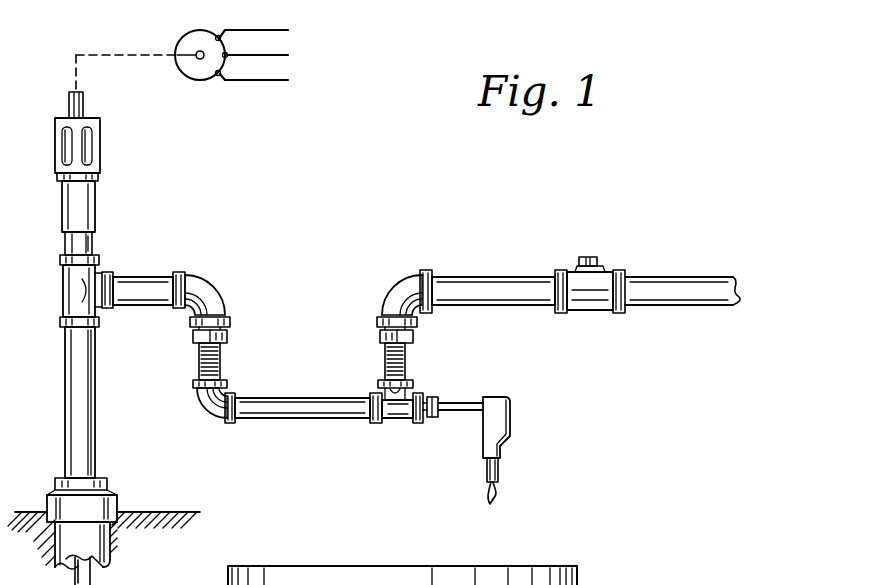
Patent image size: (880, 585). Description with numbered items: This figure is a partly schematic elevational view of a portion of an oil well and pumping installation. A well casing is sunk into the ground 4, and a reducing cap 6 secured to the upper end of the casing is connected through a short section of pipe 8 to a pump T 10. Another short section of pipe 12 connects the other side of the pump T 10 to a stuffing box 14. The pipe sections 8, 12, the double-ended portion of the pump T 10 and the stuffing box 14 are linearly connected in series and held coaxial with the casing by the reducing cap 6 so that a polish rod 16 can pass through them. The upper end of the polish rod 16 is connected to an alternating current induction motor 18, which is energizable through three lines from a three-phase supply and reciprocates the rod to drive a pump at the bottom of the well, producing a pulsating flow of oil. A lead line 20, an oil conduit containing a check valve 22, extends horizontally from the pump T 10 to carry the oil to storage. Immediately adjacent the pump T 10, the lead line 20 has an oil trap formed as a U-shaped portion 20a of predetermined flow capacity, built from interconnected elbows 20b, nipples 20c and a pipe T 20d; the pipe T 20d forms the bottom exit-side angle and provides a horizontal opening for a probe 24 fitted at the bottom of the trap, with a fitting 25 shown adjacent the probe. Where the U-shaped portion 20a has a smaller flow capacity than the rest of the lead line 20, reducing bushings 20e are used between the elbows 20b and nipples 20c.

The ground 4 is at (148, 551).
The reducing cap 6 is at (107, 492).
The short section of pipe 8 is at (95, 427).
The pump T 10 is at (63, 288).
The short section of pipe 12 is at (93, 246).
The stuffing box 14 is at (93, 153).
The polish rod 16 is at (84, 101).
The alternating current induction motor 18 is at (199, 79).
The lead line 20 is at (158, 277).
The U-shaped portion 20a is at (320, 303).
The elbows 20b is at (200, 278).
The nipples 20c is at (220, 366).
The pipe T 20d is at (395, 420).
The reducing bushings 20e is at (222, 338).
The check valve 22 is at (575, 270).
The probe 24 is at (467, 403).
The union 25 is at (433, 418).